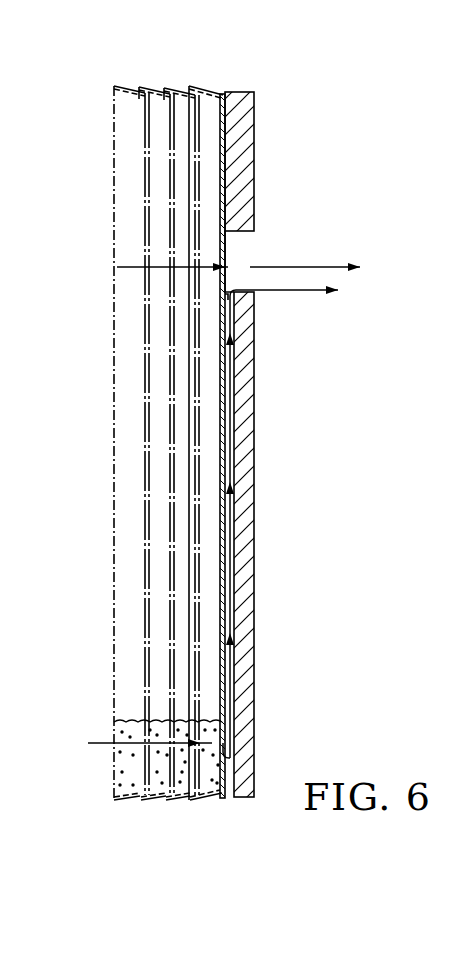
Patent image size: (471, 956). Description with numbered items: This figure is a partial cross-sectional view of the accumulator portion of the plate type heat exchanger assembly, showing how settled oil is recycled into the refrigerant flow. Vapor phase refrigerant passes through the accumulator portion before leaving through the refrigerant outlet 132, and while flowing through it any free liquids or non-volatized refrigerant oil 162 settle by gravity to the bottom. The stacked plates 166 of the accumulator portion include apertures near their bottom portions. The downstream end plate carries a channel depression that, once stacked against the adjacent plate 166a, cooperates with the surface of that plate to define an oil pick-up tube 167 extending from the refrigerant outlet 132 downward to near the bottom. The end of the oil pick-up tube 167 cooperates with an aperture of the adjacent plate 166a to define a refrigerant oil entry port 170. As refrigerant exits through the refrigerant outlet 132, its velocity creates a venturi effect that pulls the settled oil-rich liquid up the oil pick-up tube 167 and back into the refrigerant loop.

The plates 166 is at (180, 90).
The adjacent plate 166a is at (212, 90).
The refrigerant outlet 132 is at (242, 252).
The oil pick-up tube 167 is at (229, 470).
The non-volatized refrigerant oil 162 is at (120, 763).
The refrigerant oil entry port 170 is at (228, 747).